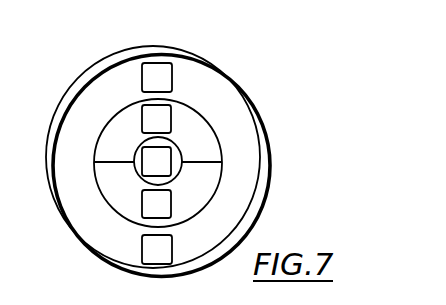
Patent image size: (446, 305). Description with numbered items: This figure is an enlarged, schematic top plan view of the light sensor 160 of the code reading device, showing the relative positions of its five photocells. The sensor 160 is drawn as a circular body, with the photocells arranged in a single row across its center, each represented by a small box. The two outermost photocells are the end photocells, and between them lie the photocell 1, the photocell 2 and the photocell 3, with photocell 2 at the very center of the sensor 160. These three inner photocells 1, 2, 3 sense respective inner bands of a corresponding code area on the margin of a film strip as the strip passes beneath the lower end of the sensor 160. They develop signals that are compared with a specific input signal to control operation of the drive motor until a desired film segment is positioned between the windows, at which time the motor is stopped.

The light sensor 160 is at (196, 161).
The photocell 1 is at (156, 119).
The photocell 2 is at (156, 161).
The photocell 3 is at (156, 204).